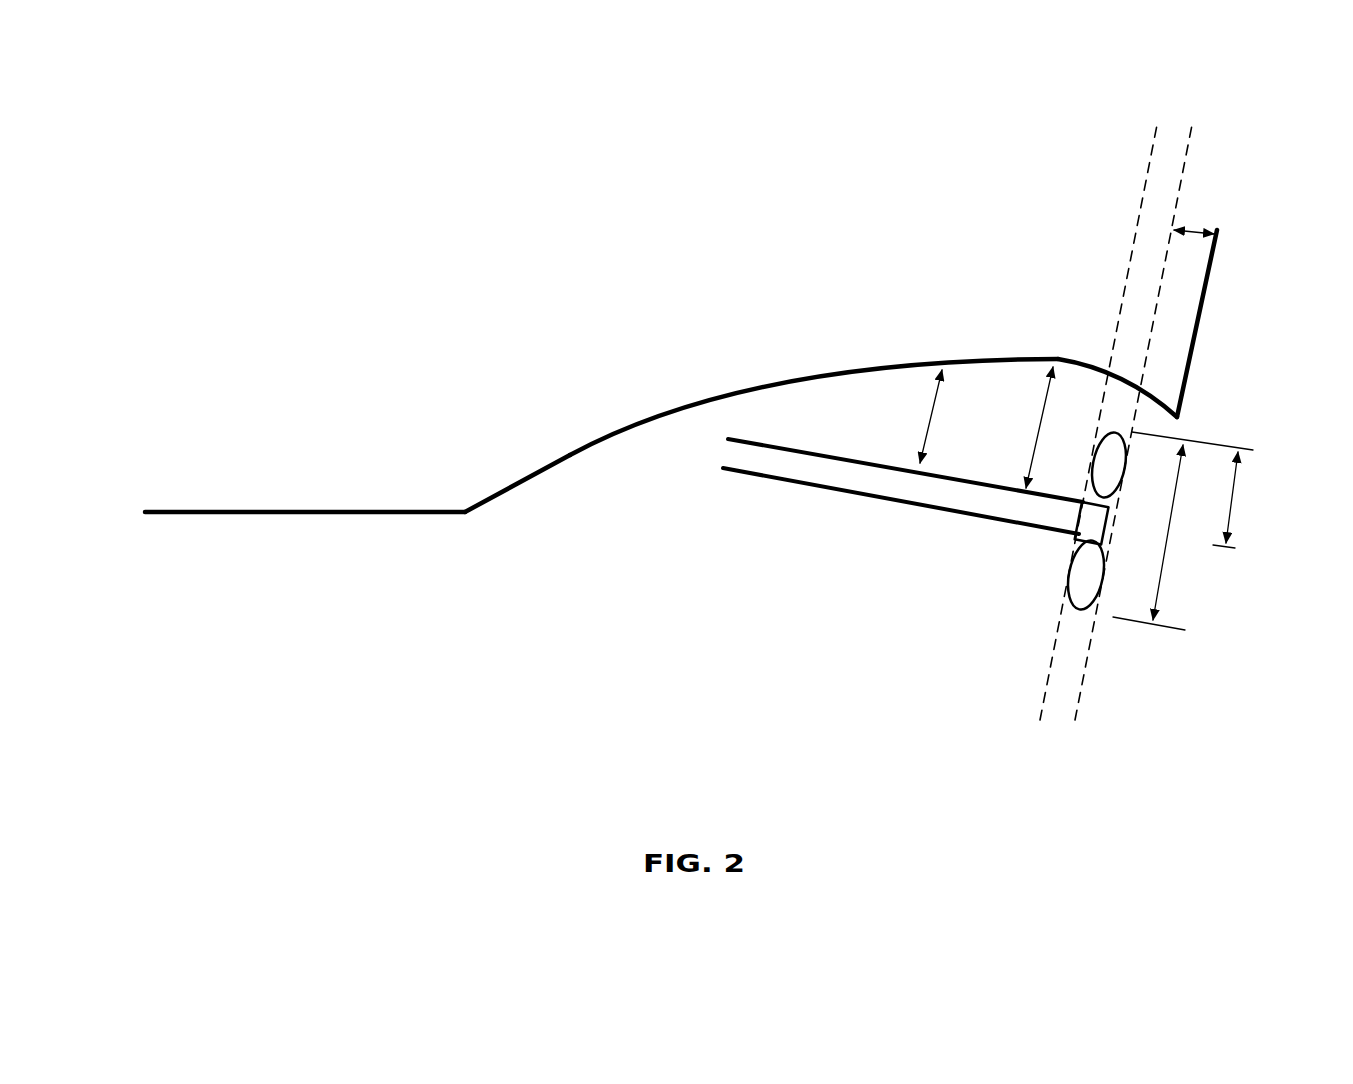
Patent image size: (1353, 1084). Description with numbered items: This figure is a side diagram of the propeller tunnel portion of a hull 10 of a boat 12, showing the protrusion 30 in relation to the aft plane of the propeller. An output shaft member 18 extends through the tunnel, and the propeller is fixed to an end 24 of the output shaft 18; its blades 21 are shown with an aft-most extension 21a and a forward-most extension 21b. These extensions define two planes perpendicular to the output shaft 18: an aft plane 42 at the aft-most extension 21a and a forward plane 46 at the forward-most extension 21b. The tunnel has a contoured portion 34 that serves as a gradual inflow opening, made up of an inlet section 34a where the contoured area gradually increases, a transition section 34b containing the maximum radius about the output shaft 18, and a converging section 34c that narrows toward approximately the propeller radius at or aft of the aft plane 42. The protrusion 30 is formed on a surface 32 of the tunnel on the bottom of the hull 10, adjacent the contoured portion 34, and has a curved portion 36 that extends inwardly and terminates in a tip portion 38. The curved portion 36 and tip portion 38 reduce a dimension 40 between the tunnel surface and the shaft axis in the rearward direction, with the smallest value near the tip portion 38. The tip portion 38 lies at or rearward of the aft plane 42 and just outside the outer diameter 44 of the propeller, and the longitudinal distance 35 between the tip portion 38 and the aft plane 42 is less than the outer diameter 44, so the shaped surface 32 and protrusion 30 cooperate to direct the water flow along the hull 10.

The hull 10 is at (357, 419).
The boat 12 is at (226, 307).
The output shaft member 18 is at (812, 463).
The blades 21 is at (1059, 553).
The aft-most extension 21a is at (1102, 587).
The forward-most extension 21b is at (1087, 443).
The end 24 is at (1070, 517).
The protrusion 30 is at (1165, 375).
The surface 32 is at (688, 413).
The contoured portion 34 is at (865, 433).
The inlet section 34a is at (568, 455).
The transition section 34b is at (993, 358).
The converging section 34c is at (1123, 383).
The longitudinal distance 35 is at (1197, 230).
The curved portion 36 is at (1088, 365).
The tip portion 38 is at (1182, 407).
The dimension 40 is at (918, 416).
The aft plane 42 is at (1078, 707).
The outer diameter 44 is at (1163, 560).
The forward plane 46 is at (1042, 707).